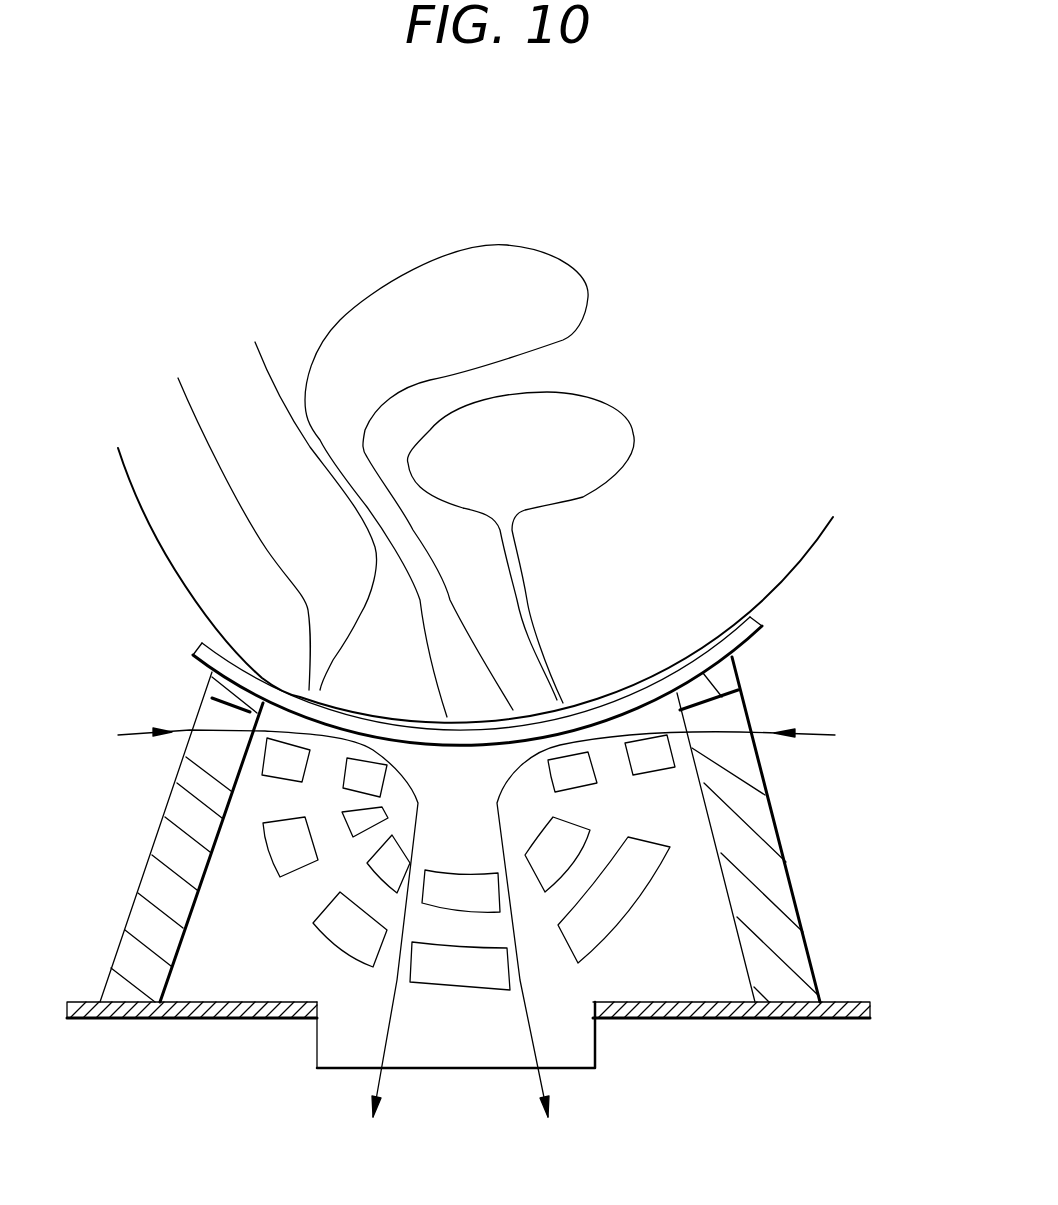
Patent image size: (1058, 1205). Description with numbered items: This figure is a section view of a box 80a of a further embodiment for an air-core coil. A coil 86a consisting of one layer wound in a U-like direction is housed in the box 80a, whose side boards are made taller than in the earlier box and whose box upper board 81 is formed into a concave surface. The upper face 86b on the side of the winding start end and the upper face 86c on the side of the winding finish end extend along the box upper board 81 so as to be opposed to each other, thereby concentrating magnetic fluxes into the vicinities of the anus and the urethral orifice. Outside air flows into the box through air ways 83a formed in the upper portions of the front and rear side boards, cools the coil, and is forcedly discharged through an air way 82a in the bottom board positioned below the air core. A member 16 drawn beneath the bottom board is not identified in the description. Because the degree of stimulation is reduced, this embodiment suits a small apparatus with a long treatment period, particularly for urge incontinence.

The outlet duct 16 is at (317, 1050).
The box 80a is at (790, 875).
The box upper board 81 is at (762, 630).
The air way 82a is at (590, 1012).
The air ways 83a is at (745, 753).
The coil 86a is at (617, 922).
The upper face 86b is at (270, 766).
The upper face 86c is at (657, 770).